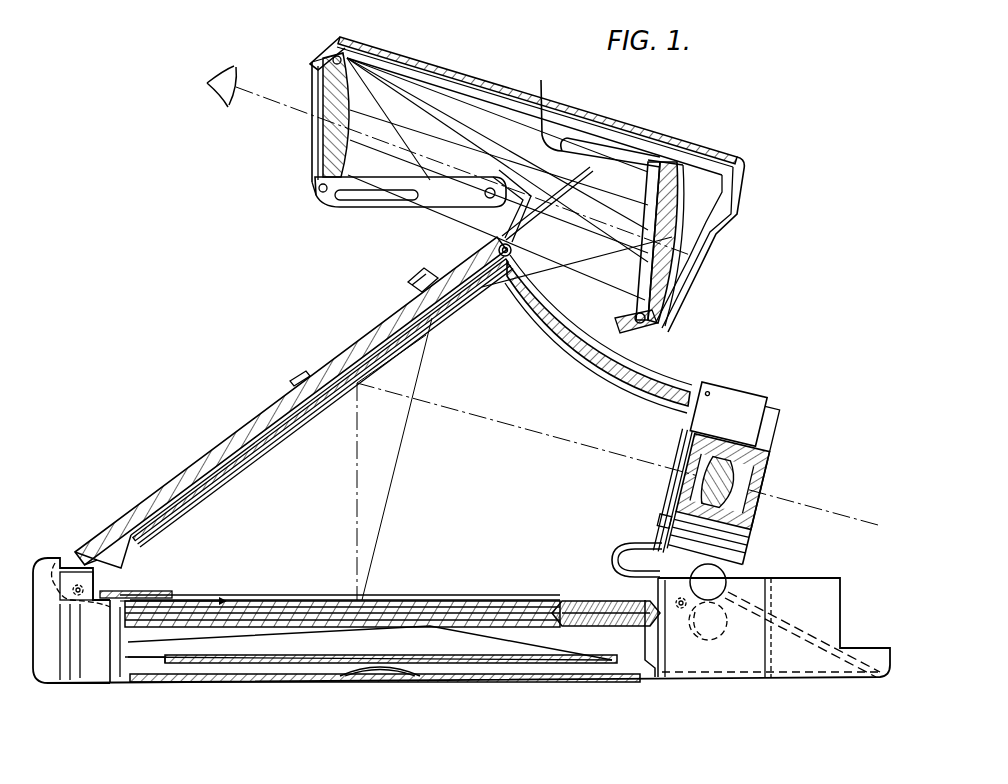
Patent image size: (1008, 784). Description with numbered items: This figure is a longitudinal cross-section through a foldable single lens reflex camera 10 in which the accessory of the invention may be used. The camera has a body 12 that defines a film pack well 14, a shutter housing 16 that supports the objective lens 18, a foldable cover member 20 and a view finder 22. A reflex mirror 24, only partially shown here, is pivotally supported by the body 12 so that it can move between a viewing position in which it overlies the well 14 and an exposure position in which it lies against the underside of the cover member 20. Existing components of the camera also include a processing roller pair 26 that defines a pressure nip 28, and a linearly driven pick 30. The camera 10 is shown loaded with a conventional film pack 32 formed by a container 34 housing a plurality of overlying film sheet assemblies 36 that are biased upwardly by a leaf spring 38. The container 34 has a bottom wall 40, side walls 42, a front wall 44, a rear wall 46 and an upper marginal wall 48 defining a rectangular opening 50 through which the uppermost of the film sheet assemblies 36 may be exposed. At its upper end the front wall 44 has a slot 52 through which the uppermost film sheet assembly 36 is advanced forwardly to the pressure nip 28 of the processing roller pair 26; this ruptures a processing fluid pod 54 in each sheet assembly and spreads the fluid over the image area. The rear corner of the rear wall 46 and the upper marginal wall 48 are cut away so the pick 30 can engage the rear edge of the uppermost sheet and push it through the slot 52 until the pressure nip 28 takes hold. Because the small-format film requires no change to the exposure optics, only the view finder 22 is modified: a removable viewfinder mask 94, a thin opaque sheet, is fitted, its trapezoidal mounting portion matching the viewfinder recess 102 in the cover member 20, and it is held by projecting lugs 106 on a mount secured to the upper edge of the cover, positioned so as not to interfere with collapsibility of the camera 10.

The foldable single lens reflex camera 10 is at (300, 330).
The body 12 is at (72, 685).
The film pack well 14 is at (167, 670).
The shutter housing 16 is at (742, 405).
The objective lens 18 is at (756, 478).
The foldable cover member 20 is at (241, 425).
The view finder 22 is at (657, 130).
The reflex mirror 24 is at (150, 594).
The processing roller pair 26 is at (722, 577).
The pressure nip 28 is at (700, 644).
The linearly driven pick 30 is at (106, 606).
The film pack 32 is at (432, 594).
The container 34 is at (464, 667).
The film sheet assemblies 36 is at (470, 604).
The leaf spring 38 is at (380, 624).
The bottom wall 40 is at (547, 666).
The side walls 42 is at (628, 650).
The front wall 44 is at (666, 648).
The rear wall 46 is at (118, 672).
The upper marginal wall 48 is at (573, 601).
The rectangular opening 50 is at (552, 600).
The slot 52 is at (676, 600).
The processing fluid pod 54 is at (610, 606).
The removable viewfinder mask 94 is at (541, 105).
The viewfinder recess 102 is at (677, 364).
The projecting lugs 106 is at (418, 280).